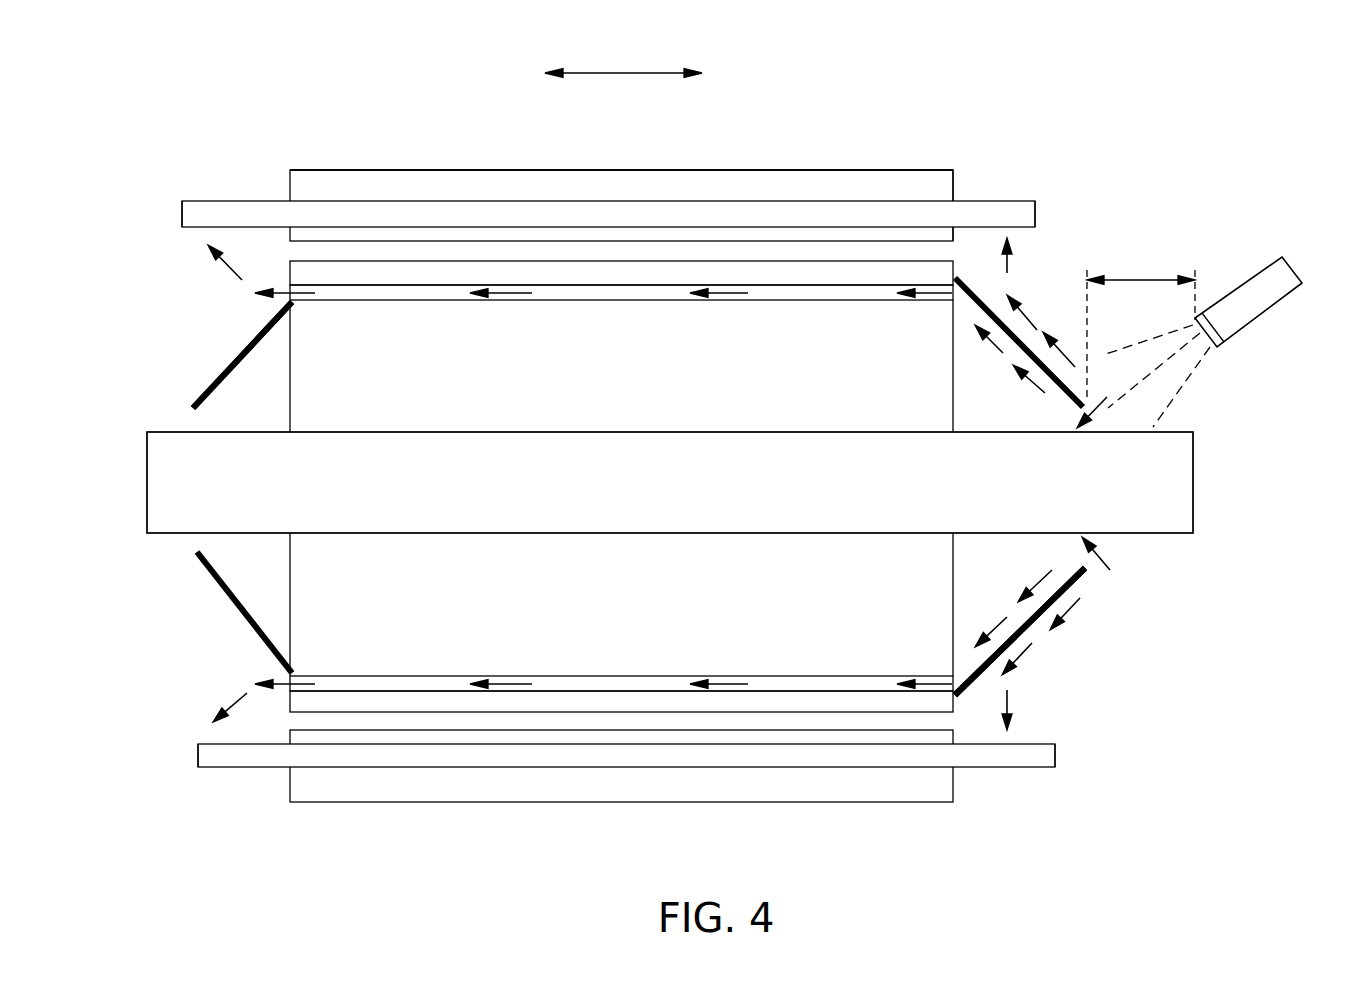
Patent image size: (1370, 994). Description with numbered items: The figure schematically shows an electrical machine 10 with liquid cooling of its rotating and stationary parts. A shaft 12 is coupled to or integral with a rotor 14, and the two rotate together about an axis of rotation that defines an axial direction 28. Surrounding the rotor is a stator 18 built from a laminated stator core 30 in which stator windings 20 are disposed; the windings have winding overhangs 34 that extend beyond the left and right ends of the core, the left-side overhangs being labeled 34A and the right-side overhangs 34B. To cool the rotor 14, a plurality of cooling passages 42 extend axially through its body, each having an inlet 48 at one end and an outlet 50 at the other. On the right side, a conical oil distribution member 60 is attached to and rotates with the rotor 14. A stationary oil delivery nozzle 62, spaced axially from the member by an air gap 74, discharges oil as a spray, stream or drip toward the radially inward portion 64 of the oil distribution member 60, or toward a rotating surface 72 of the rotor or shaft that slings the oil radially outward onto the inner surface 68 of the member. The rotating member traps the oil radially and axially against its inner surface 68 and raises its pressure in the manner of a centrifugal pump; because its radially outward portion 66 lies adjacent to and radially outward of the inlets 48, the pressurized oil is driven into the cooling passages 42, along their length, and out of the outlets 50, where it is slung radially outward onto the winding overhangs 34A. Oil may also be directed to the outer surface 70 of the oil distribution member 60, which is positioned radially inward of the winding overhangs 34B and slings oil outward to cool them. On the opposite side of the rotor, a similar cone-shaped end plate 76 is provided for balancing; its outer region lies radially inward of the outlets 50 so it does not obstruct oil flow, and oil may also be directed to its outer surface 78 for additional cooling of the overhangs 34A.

The electrical machine 10 is at (1157, 62).
The shaft 12 is at (610, 494).
The rotor 14 is at (610, 386).
The stator 18 is at (877, 130).
The stator windings 20 is at (635, 200).
The axial direction 28 is at (634, 73).
The laminated stator core 30 is at (777, 170).
The winding overhangs 34 is at (1033, 128).
The stator winding overhangs 34A is at (200, 201).
The stator winding overhangs 34B is at (1007, 201).
The cooling passages 42 is at (553, 300).
The inlet 48 is at (955, 297).
The outlet 50 is at (290, 288).
The oil distribution member 60 is at (1063, 393).
The oil delivery nozzle 62 is at (1297, 268).
The radially inward portion 64 is at (1103, 578).
The radially outward portion 66 is at (972, 700).
The inner surface 68 is at (1080, 575).
The outer surface 70 is at (1080, 583).
The rotating surface 72 is at (1075, 430).
The air gap 74 is at (1140, 280).
The end plate 76 is at (240, 362).
The outer surface 78 is at (222, 378).